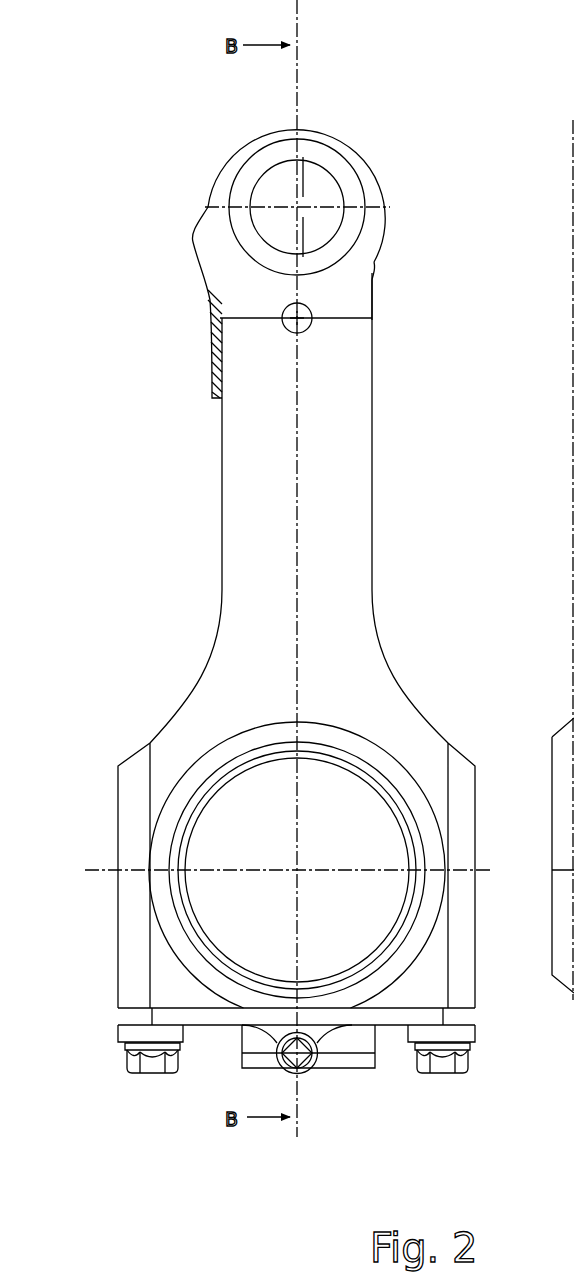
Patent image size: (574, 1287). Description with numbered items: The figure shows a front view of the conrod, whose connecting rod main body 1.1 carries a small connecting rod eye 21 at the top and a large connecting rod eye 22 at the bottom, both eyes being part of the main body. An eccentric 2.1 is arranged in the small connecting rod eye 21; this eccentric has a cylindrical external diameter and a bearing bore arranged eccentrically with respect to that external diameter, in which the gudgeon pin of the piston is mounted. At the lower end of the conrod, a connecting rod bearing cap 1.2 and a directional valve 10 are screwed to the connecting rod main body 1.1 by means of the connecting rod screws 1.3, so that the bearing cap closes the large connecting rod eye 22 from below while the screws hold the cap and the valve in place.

The small connecting rod eye 21 is at (543, 153).
The eccentric 2.1 is at (338, 250).
The connecting rod main body 1.1 is at (221, 672).
The large connecting rod eye 22 is at (130, 695).
The connecting rod bearing cap 1.2 is at (428, 953).
The directional valve 10 is at (393, 1047).
The connecting rod screws 1.3 is at (460, 1050).